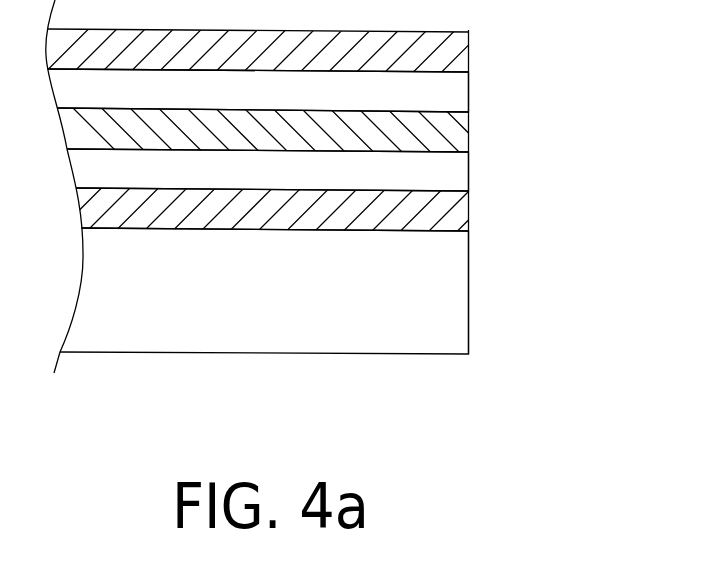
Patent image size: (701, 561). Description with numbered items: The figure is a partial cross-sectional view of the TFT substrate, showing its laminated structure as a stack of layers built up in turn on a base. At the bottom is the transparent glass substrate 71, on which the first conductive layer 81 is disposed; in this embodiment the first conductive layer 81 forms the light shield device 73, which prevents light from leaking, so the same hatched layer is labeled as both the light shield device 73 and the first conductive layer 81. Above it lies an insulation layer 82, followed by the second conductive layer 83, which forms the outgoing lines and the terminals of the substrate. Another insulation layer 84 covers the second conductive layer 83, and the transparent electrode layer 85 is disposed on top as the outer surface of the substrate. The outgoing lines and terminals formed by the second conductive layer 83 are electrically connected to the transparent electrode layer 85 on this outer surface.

The transparent electrode layer 85 is at (468, 53).
The insulation layer 84 is at (468, 97).
The second conductive layer 83 is at (468, 140).
The insulation layer 82 is at (468, 180).
The light shield device 73 is at (340, 209).
The first conductive layer 81 is at (468, 215).
The transparent glass substrate 71 is at (468, 307).